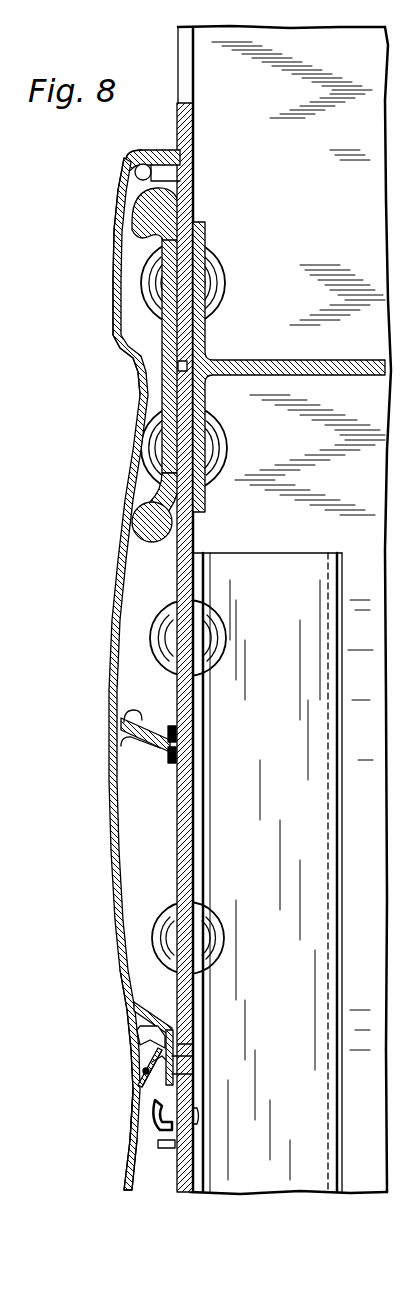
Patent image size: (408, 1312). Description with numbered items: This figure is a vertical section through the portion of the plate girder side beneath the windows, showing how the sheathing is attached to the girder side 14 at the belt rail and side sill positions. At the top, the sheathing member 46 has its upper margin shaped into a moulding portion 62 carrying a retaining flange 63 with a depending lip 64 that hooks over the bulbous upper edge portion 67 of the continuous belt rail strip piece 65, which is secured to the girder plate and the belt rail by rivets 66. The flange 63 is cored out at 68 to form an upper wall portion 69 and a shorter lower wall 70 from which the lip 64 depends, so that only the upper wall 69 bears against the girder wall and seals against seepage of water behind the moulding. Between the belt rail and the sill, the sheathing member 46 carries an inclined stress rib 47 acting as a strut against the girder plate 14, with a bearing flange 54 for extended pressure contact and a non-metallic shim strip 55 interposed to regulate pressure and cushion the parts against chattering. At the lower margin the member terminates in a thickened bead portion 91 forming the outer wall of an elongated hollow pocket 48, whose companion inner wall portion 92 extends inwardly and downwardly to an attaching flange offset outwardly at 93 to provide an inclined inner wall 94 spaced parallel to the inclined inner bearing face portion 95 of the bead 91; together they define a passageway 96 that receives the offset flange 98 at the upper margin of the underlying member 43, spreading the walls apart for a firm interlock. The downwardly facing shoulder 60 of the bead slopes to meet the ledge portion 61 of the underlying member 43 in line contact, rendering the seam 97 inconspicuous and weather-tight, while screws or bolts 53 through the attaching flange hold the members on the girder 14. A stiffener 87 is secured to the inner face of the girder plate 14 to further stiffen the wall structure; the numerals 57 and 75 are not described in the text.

The girder side 14 is at (195, 528).
The sheathing members 43 is at (126, 1180).
The sheathing member 46 is at (113, 614).
The stress ribs 47 is at (125, 710).
The pockets 48 is at (135, 1025).
The screws or bolts 53 is at (155, 1124).
The bearing flange 54 is at (165, 750).
The shim strip 55 is at (178, 748).
The bracket 57 is at (165, 1143).
The shoulder 60 is at (143, 1071).
The ledge portion 61 is at (150, 1091).
The moulding portion 62 is at (117, 262).
The retaining flange 63 is at (136, 182).
The depending lip 64 is at (186, 205).
The belt rail strip piece 65 is at (162, 330).
The rivets 66 is at (223, 448).
The bulbous upper edge portion 67 is at (140, 213).
The cored-out portion 68 is at (172, 176).
The upper wall portion 69 is at (160, 150).
The lower wall 70 is at (135, 157).
The flange 75 is at (262, 360).
The stiffeners 87 is at (267, 872).
The bead portion 91 is at (152, 1061).
The inner wall portion 92 is at (158, 1012).
The offset 93 is at (175, 1074).
The inner wall 94 is at (185, 1048).
The inner bearing face portion 95 is at (140, 1048).
The passageway 96 is at (172, 1096).
The seam 97 is at (150, 1076).
The offset flange 98 is at (178, 1056).